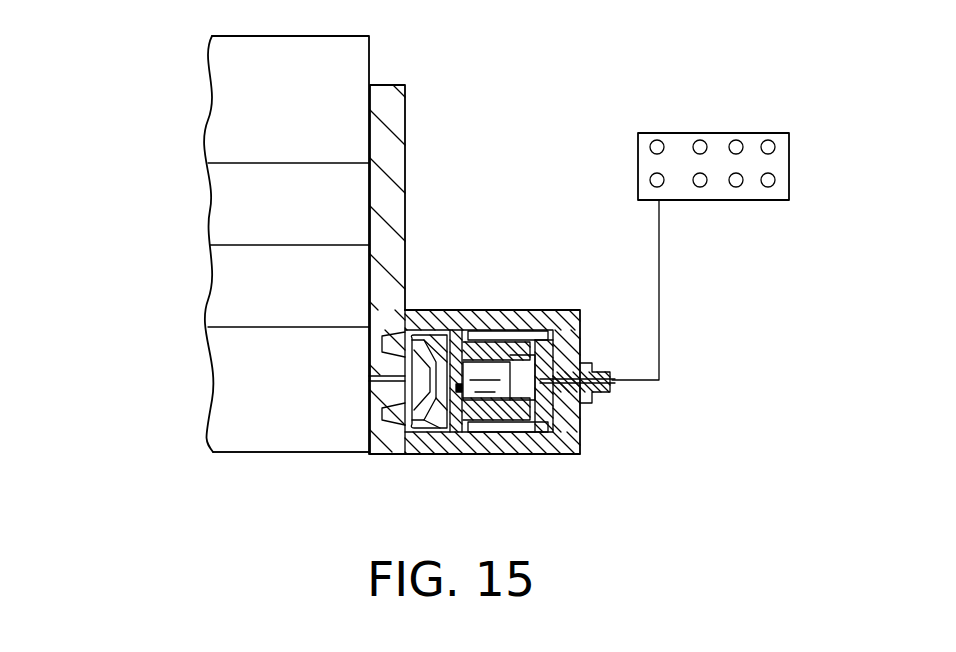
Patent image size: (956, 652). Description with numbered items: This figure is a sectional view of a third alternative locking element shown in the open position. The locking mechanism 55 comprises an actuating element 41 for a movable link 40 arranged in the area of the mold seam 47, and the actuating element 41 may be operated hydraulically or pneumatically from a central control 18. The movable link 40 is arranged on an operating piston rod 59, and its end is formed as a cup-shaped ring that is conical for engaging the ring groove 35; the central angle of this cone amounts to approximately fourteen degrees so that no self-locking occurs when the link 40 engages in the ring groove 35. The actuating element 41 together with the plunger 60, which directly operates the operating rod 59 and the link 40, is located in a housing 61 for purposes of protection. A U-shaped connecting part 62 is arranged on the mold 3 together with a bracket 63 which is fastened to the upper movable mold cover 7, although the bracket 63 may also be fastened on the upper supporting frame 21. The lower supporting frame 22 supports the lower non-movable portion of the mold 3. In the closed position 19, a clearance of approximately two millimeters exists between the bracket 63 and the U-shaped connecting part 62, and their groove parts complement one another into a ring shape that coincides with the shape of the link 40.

The central control 18 is at (720, 142).
The closed position 19 is at (233, 245).
The upper supporting frame 21 is at (222, 108).
The upper movable mold cover 7 is at (228, 208).
The mold 3 is at (232, 303).
The lower supporting frame 22 is at (235, 401).
The bracket 63 is at (405, 121).
The movable link 40 is at (442, 326).
The operating piston rod 59 is at (488, 378).
The plunger 60 is at (530, 365).
The actuating element 41 is at (583, 416).
The locking mechanism 55 is at (583, 448).
The housing 61 is at (568, 458).
The U-shaped connecting part 62 is at (404, 440).
The ring groove 35 is at (372, 440).
The mold seam 47 is at (354, 382).